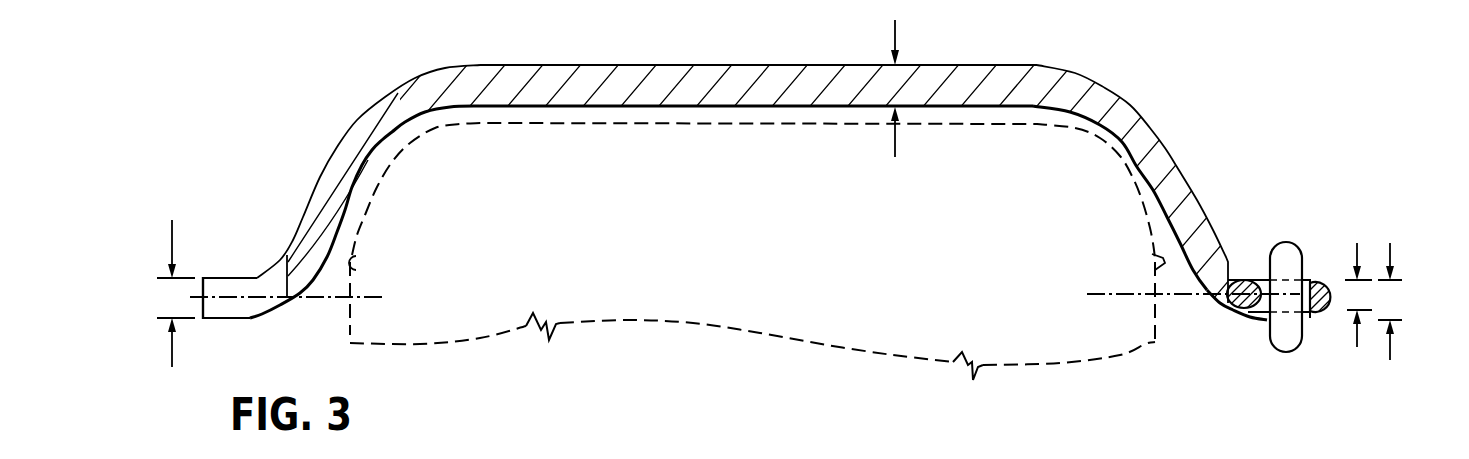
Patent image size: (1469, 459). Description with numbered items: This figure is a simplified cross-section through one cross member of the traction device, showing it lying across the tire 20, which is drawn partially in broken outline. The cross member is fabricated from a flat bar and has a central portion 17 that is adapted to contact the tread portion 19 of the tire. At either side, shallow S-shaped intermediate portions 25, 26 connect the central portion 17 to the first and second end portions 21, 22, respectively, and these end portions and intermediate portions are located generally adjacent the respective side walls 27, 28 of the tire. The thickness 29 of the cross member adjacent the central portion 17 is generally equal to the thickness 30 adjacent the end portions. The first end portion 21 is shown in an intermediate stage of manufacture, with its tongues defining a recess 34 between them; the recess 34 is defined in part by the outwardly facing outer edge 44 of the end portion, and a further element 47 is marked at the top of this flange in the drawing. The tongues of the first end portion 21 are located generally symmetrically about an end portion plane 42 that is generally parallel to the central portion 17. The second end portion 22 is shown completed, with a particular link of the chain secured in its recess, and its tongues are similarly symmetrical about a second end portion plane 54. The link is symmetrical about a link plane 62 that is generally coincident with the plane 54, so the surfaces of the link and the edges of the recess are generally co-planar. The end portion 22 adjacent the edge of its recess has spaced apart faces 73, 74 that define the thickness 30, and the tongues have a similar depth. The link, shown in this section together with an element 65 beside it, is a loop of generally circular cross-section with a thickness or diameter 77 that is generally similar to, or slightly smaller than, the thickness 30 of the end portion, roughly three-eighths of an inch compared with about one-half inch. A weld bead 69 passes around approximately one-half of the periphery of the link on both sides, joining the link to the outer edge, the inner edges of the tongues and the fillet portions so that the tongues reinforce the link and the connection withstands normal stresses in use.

The central portion 17 is at (733, 78).
The tread portion 19 is at (680, 121).
The tire 20 is at (350, 328).
The first end portion 21 is at (250, 266).
The second end portion 22 is at (1252, 250).
The intermediate portion 25 is at (368, 122).
The intermediate portion 26 is at (1163, 140).
The side wall 27 is at (357, 263).
The side wall 28 is at (1152, 257).
The thickness 29 is at (896, 146).
The thickness 30 is at (170, 350).
The recess 34 is at (250, 266).
The end portion plane 42 is at (372, 290).
The outer edge 44 is at (278, 308).
The flange upper surface 47 is at (218, 280).
The second end portion plane 54 is at (1105, 297).
The link plane 62 is at (1105, 297).
The stud 65 is at (1303, 236).
The weld bead 69 is at (1246, 270).
The face 73 is at (1258, 262).
The face 74 is at (1250, 313).
The thickness 77 is at (1357, 340).